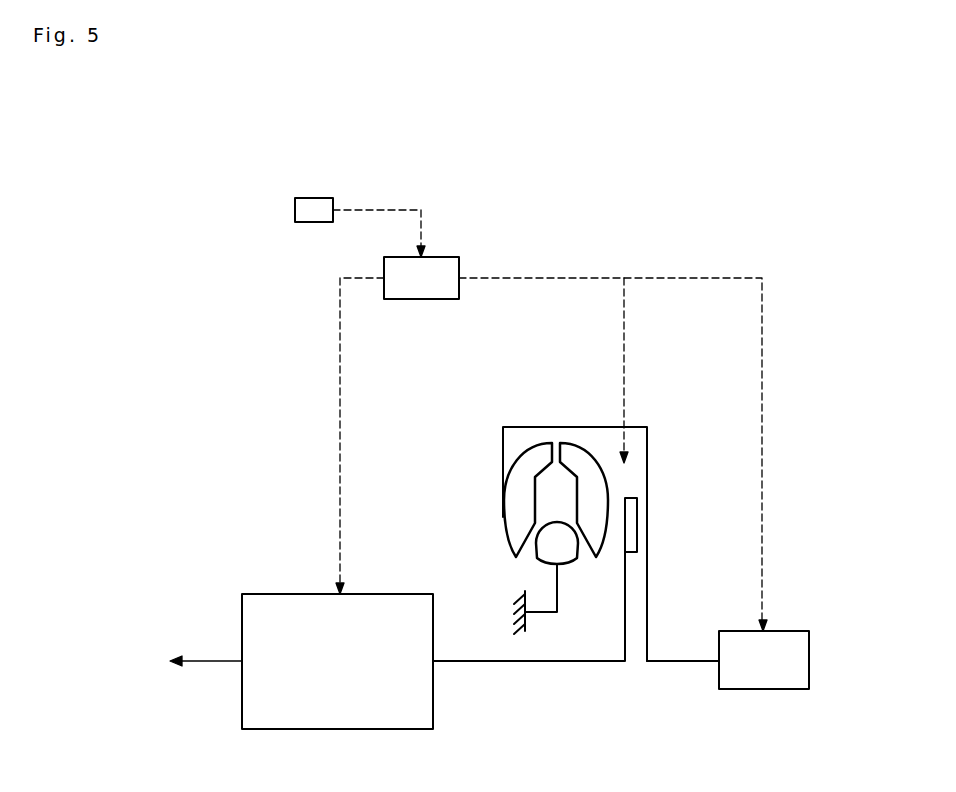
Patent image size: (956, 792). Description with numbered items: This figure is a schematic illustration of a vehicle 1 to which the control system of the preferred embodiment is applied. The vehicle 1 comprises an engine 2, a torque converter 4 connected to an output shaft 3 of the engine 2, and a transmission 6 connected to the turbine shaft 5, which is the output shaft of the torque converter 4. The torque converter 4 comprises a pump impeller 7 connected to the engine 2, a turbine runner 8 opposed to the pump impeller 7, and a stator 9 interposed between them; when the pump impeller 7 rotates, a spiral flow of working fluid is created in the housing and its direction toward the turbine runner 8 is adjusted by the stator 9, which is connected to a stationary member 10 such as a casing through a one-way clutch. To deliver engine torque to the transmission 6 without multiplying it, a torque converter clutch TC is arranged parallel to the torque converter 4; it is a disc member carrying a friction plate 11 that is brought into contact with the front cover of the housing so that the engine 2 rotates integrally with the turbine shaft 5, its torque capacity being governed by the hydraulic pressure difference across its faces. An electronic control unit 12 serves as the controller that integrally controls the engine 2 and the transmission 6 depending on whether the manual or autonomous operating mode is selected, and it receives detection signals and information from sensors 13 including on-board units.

The vehicle 1 is at (624, 228).
The engine 2 is at (811, 660).
The output shaft 3 is at (680, 663).
The torque converter 4 is at (533, 489).
The turbine shaft 5 is at (590, 663).
The transmission 6 is at (426, 549).
The pump impeller 7 is at (533, 460).
The turbine runner 8 is at (575, 455).
The stator 9 is at (565, 553).
The stationary member 10 is at (512, 612).
The friction plate 11 is at (638, 524).
The electronic control unit 12 is at (425, 300).
The sensors 13 is at (320, 198).
The torque converter clutch TC is at (641, 482).